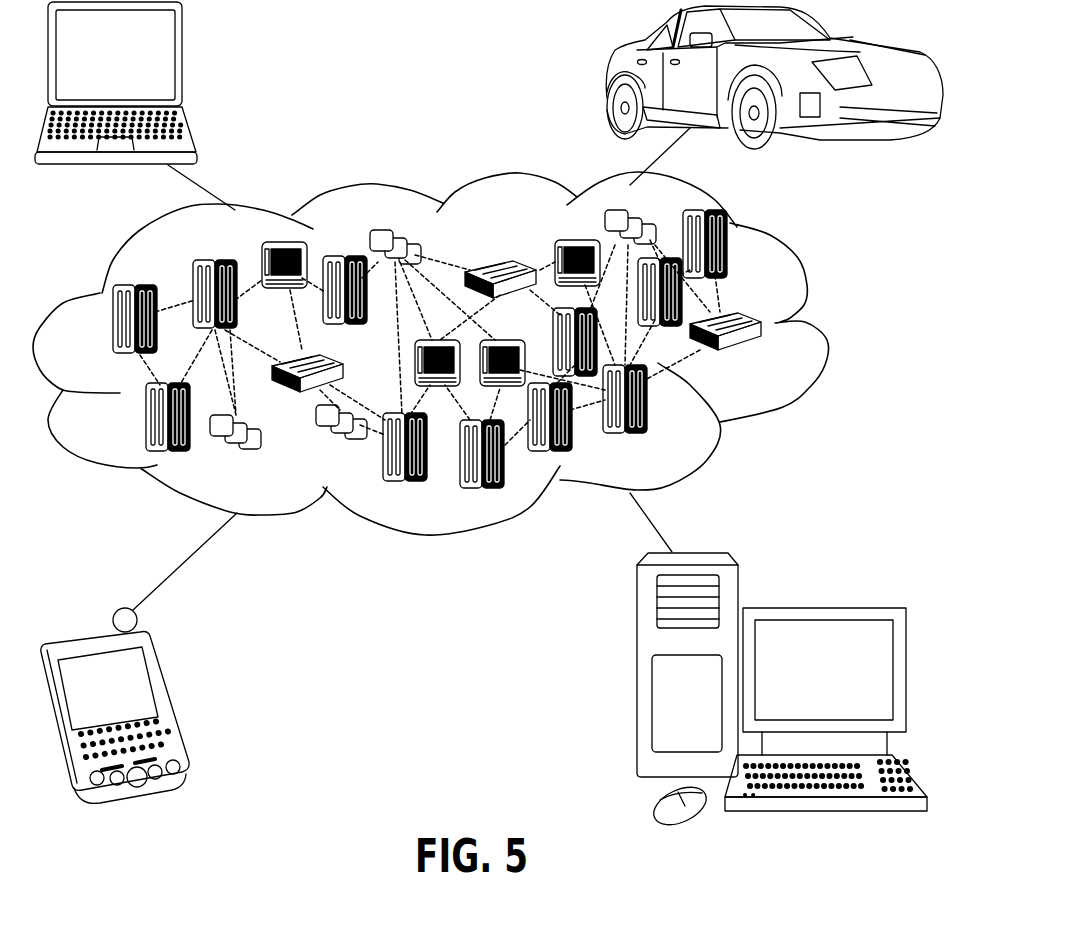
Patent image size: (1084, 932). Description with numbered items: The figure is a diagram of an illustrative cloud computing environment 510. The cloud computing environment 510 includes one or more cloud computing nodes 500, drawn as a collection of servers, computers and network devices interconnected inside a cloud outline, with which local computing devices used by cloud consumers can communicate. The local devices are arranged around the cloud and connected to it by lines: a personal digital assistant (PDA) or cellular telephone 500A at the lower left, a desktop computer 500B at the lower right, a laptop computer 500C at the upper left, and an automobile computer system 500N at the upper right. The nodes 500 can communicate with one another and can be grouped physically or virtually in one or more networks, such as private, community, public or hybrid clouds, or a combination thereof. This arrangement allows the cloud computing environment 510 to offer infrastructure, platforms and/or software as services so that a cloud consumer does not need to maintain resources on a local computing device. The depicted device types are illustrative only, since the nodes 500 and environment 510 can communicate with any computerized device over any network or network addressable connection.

The cloud computing nodes 500 is at (774, 360).
The cloud computing environment 510 is at (825, 330).
The personal digital assistant (PDA) or cellular telephone 500A is at (173, 700).
The desktop computer 500B is at (820, 607).
The laptop computer 500C is at (183, 62).
The automobile computer system 500N is at (610, 73).